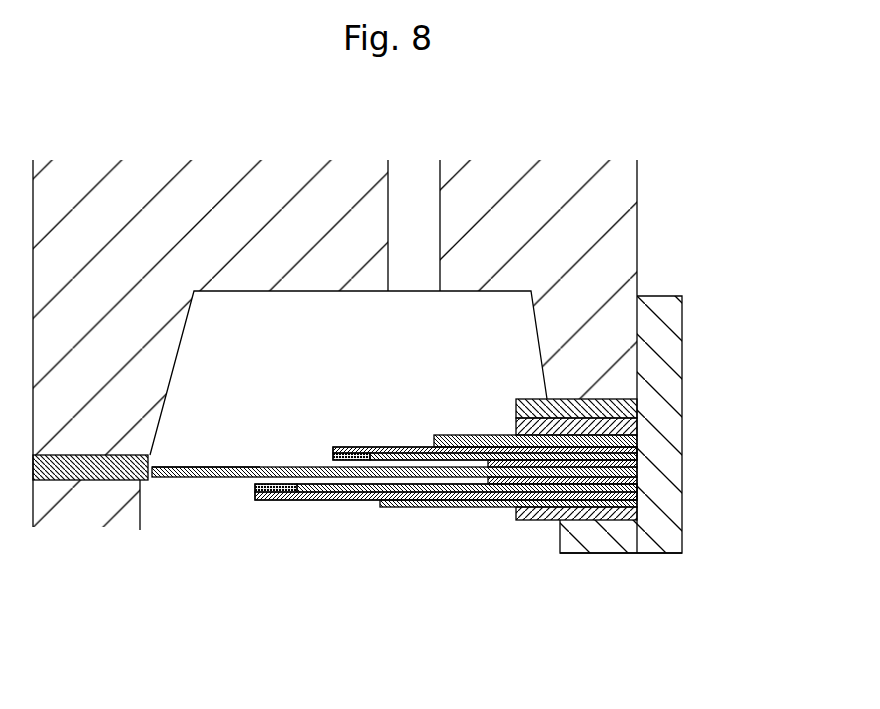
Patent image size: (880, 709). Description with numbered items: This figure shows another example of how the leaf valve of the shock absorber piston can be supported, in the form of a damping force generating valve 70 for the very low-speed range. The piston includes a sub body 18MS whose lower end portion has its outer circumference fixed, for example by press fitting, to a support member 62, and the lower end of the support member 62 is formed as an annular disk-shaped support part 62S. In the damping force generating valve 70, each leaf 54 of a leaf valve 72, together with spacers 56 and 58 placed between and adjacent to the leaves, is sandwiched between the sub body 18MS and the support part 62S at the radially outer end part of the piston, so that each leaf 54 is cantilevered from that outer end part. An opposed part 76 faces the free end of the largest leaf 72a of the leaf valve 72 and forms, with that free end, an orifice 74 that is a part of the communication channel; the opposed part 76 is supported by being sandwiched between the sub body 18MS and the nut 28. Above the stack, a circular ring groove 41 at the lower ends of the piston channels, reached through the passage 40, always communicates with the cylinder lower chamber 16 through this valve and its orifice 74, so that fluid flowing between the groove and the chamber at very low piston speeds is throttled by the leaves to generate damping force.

The cylinder lower chamber 16 is at (508, 566).
The sub body 18MS is at (607, 188).
The nut 28 is at (113, 500).
The slit / supply path 40 is at (411, 205).
The circular ring groove 41 is at (300, 320).
The piezoelectric element / electrode layer 54 is at (351, 447).
The spacer 56 is at (637, 460).
The spacer 58 is at (637, 408).
The support member 62 is at (645, 358).
The support part 62S is at (625, 540).
The damping force generating valve 70 is at (425, 545).
The leaf valve 72 is at (394, 519).
The largest leaf 72a is at (206, 467).
The orifice 74 is at (150, 481).
The opposed part 76 is at (56, 468).